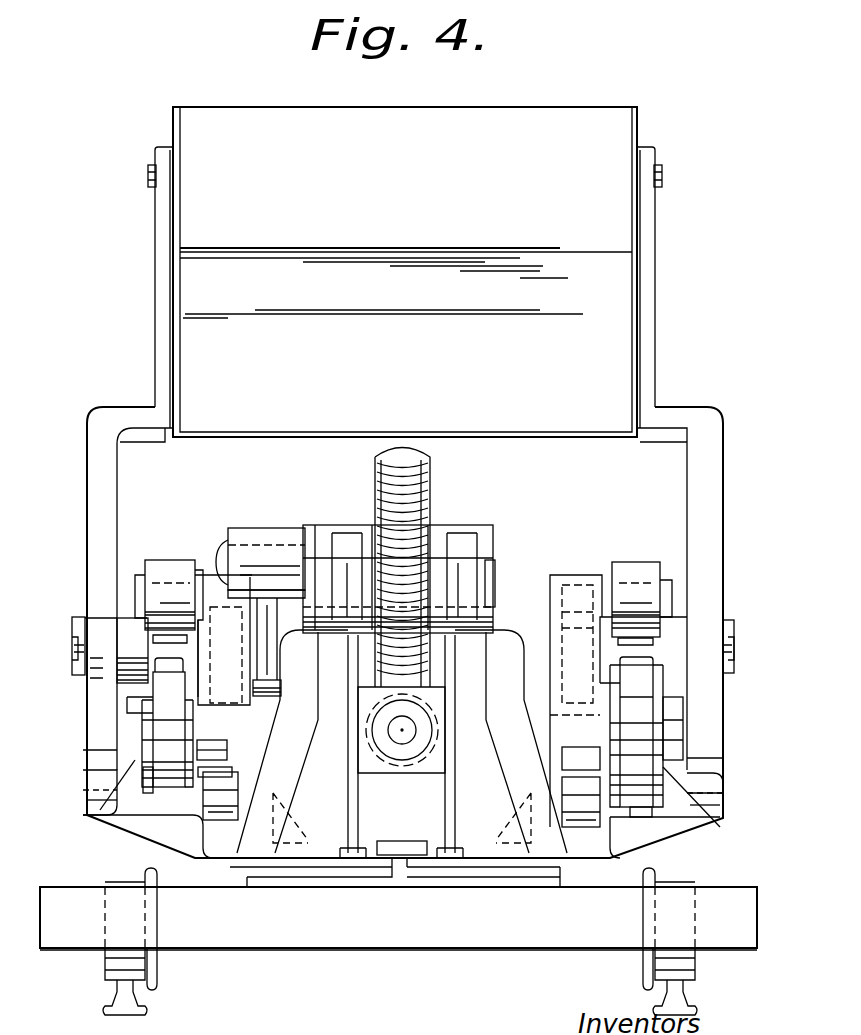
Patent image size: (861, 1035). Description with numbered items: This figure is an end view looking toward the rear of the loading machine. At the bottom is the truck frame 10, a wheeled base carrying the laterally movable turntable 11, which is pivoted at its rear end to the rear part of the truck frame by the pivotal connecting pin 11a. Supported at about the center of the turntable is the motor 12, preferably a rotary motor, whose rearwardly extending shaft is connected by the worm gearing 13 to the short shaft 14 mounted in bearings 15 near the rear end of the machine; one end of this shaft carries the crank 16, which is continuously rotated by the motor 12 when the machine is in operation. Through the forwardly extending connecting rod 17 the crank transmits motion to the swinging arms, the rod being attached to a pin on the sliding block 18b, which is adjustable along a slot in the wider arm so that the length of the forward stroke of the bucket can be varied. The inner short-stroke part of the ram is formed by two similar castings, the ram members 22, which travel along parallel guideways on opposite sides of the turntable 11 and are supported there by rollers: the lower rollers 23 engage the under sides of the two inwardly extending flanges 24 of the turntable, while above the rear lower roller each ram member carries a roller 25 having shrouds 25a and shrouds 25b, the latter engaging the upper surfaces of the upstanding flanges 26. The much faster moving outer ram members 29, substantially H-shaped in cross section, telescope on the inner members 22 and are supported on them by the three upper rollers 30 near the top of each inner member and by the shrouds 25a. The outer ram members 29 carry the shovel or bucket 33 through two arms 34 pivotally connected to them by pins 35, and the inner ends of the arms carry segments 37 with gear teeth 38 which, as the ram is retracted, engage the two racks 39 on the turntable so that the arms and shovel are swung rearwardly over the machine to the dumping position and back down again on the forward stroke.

The truck frame 10 is at (398, 936).
The turntable 11 is at (402, 746).
The pivotal connecting pin 11a is at (396, 855).
The motor 12 is at (402, 741).
The worm gearing 13 is at (430, 482).
The short shaft 14 is at (494, 572).
The bearings 15 is at (492, 532).
The crank 16 is at (290, 550).
The connecting rod 17 is at (274, 655).
The sliding block 18b is at (266, 697).
The ram members 22 is at (550, 620).
The lower rollers 23 is at (401, 799).
The flanges 24 is at (235, 768).
The roller 25 is at (170, 666).
The shrouds 25a is at (143, 775).
The shrouds 25b is at (200, 728).
The upstanding flanges 26 is at (133, 762).
The outer ram members 29 is at (148, 650).
The upper rollers 30 is at (180, 548).
The shovel or bucket 33 is at (405, 272).
The arms 34 is at (664, 314).
The pins 35 is at (72, 642).
The segments 37 is at (88, 524).
The gear teeth 38 is at (100, 757).
The racks 39 is at (92, 783).